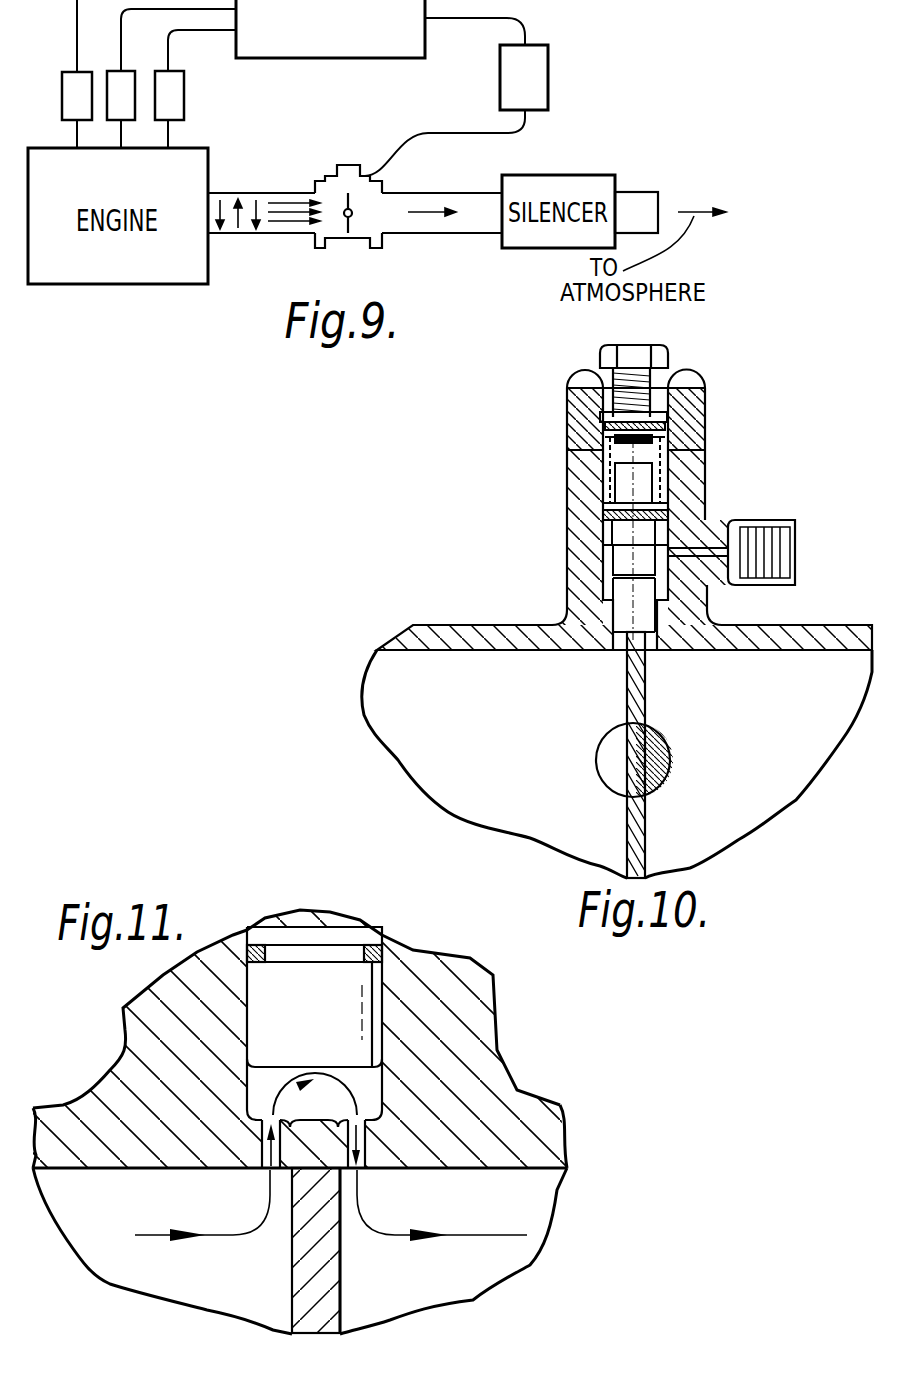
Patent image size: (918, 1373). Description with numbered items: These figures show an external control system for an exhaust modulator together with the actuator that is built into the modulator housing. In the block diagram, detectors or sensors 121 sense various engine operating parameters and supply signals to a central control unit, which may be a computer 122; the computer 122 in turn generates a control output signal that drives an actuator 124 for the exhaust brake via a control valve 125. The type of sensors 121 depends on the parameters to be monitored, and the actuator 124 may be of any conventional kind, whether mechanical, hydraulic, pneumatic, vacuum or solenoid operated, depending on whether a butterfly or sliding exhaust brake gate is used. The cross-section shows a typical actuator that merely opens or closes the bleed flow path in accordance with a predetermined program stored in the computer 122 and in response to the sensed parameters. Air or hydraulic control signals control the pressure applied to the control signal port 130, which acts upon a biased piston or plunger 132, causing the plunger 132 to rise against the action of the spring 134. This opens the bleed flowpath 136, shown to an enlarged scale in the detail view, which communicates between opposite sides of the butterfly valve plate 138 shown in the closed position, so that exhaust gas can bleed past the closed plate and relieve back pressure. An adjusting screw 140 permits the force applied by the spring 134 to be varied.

In FIG. 9, the sensors 121 is at (123, 95).
In FIG. 10, the sensors 121 is at (548, 511).
In FIG. 9, the computer 122 is at (305, 26).
In FIG. 9, the actuator 124 is at (348, 192).
In FIG. 9, the control valve 125 is at (524, 77).
In FIG. 10, the control signal port 130 is at (795, 535).
In FIG. 10, the plunger 132 is at (616, 531).
In FIG. 11, the plunger 132 is at (360, 980).
In FIG. 10, the spring 134 is at (703, 470).
In FIG. 11, the bleed flowpath 136 is at (268, 1172).
In FIG. 10, the butterfly valve plate 138 is at (645, 823).
In FIG. 11, the butterfly valve plate 138 is at (318, 1283).
In FIG. 10, the adjusting screw 140 is at (658, 357).